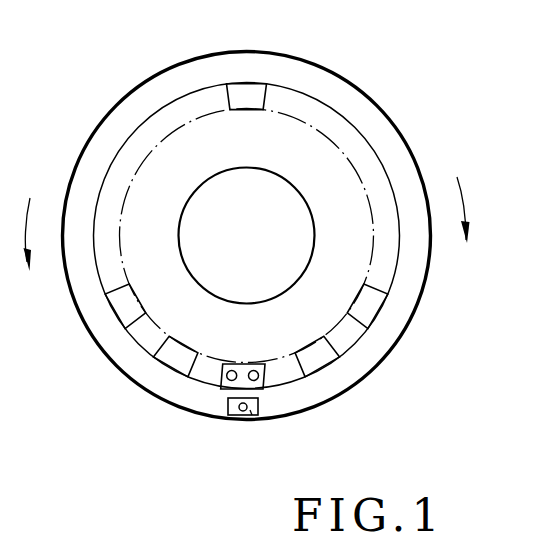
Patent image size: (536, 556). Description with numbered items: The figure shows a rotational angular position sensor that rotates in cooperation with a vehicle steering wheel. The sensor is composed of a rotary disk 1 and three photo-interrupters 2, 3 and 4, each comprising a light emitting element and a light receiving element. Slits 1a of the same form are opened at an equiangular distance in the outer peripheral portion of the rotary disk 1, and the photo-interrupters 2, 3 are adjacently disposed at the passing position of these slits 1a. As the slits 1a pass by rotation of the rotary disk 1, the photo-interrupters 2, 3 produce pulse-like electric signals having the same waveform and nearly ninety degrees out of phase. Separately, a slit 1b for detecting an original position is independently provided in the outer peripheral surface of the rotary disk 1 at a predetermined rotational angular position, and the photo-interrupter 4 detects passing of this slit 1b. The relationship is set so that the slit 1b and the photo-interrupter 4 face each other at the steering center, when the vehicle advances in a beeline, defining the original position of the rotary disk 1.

The rotary disk 1 is at (378, 127).
The slits 1a is at (250, 90).
The slit for detecting an original position 1b is at (255, 418).
The photo-interrupter 2 is at (229, 364).
The photo-interrupter 3 is at (258, 364).
The photo-interrupter 4 is at (238, 418).